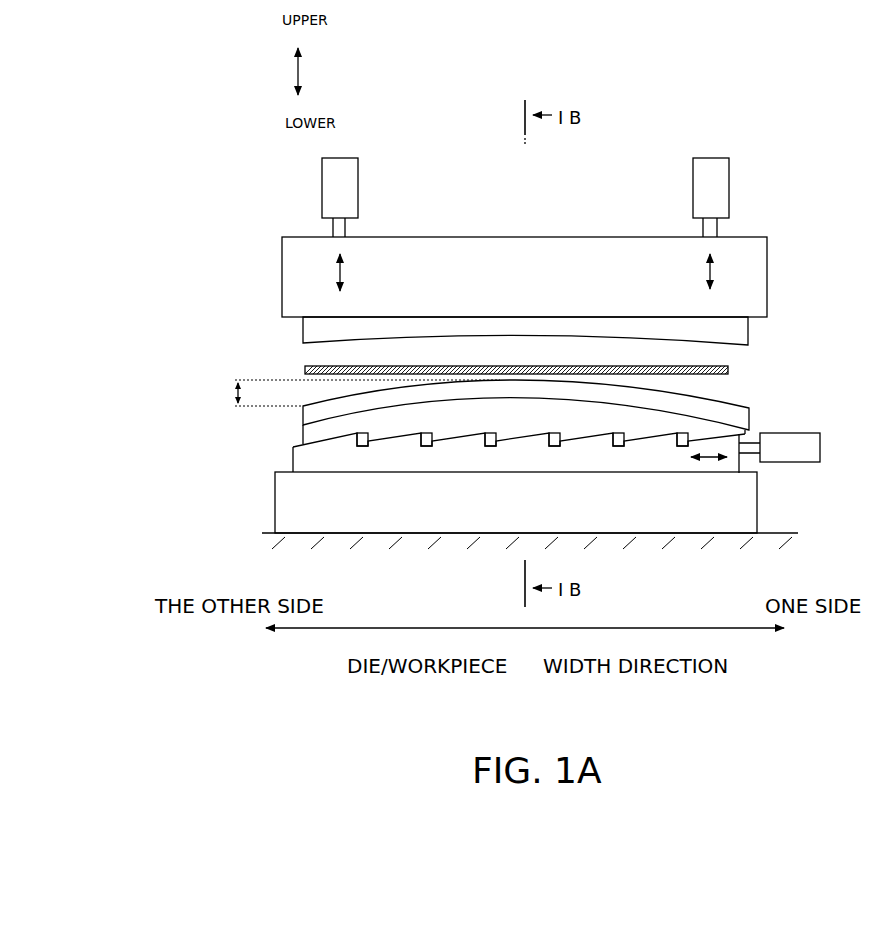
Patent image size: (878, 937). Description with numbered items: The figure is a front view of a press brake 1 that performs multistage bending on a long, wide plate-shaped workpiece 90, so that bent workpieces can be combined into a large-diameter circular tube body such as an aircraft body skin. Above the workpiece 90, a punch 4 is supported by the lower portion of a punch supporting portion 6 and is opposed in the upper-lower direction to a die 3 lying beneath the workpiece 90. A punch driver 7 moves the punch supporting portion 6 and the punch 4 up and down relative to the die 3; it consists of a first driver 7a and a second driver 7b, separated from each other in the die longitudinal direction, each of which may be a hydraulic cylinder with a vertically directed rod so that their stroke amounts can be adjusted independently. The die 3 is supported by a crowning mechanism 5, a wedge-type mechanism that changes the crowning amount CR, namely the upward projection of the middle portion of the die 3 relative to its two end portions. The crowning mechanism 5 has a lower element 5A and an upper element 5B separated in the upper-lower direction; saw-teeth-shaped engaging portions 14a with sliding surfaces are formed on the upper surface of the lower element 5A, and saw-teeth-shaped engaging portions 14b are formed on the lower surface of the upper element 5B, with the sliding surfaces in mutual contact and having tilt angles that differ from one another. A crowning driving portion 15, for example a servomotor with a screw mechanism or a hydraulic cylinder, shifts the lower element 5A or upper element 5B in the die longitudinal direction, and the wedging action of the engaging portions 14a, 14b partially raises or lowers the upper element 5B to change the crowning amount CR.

The press brake 1 is at (363, 113).
The die 3 is at (718, 405).
The punch 4 is at (303, 332).
The crowning mechanism 5 is at (509, 470).
The lower element 5A is at (293, 457).
The upper element 5B is at (303, 437).
The punch supporting portion 6 is at (284, 272).
The punch driver 7 is at (478, 183).
The first driver 7a is at (693, 188).
The second driver 7b is at (325, 188).
The engaging portions 14a is at (371, 447).
The engaging portions 14b is at (425, 447).
The crowning driving portion 15 is at (790, 462).
The workpiece 90 is at (305, 370).
The crowning amount CR is at (353, 393).